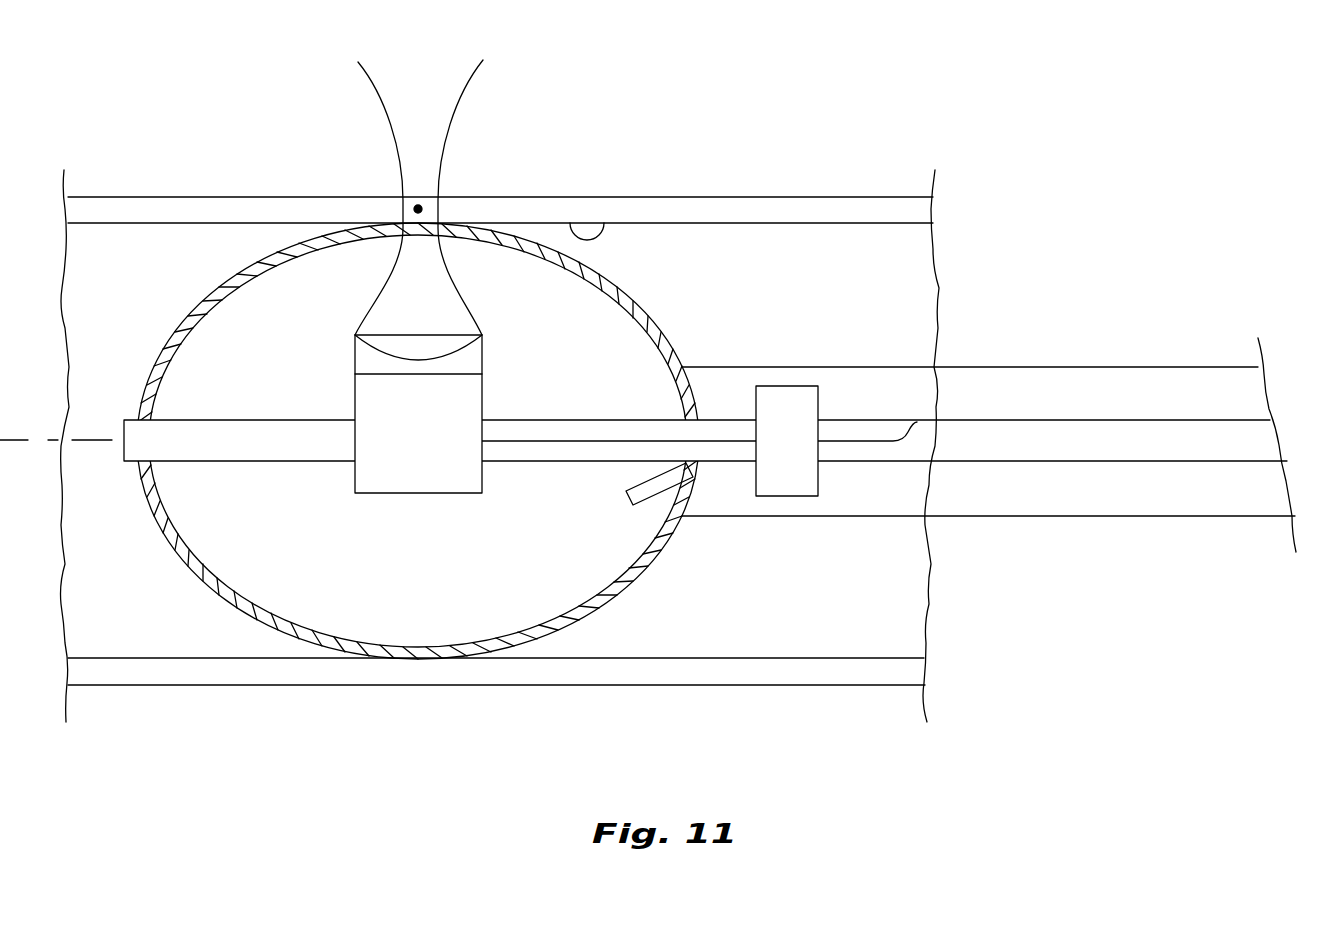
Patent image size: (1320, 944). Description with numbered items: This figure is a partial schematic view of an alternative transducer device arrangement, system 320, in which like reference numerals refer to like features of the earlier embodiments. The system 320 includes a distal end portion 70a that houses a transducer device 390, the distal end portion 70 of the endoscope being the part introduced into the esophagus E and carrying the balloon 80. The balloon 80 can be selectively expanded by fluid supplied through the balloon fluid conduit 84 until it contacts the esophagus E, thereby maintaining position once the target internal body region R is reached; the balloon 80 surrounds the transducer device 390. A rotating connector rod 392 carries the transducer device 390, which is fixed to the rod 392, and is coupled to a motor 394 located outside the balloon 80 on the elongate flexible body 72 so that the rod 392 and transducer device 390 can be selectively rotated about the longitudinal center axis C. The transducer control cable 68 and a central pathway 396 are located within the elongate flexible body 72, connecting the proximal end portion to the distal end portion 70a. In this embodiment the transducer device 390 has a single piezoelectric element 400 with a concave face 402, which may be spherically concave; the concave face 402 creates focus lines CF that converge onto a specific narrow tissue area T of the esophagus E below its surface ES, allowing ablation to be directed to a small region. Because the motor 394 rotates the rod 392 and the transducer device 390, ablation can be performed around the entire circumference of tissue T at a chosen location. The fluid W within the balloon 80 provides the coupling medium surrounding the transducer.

The system 320 is at (1170, 126).
The transducer control cable 68 is at (1153, 421).
The distal end portion 70 is at (776, 517).
The distal end portion 70a is at (184, 578).
The elongate flexible body 72 is at (848, 367).
The balloon 80 is at (583, 620).
The balloon fluid conduit 84 is at (648, 498).
The transducer device 390 is at (378, 494).
The rotating connector rod 392 is at (560, 420).
The motor 394 is at (819, 405).
The central pathway 396 is at (1087, 462).
The piezoelectric element 400 is at (483, 359).
The concave face 402 is at (418, 359).
The target internal body region R is at (386, 180).
The tissue T is at (419, 207).
The focus lines CF is at (438, 190).
The surface ES is at (604, 222).
The esophagus E is at (745, 258).
The longitudinal center axis C is at (2, 438).
The fluid within balloon W is at (535, 581).